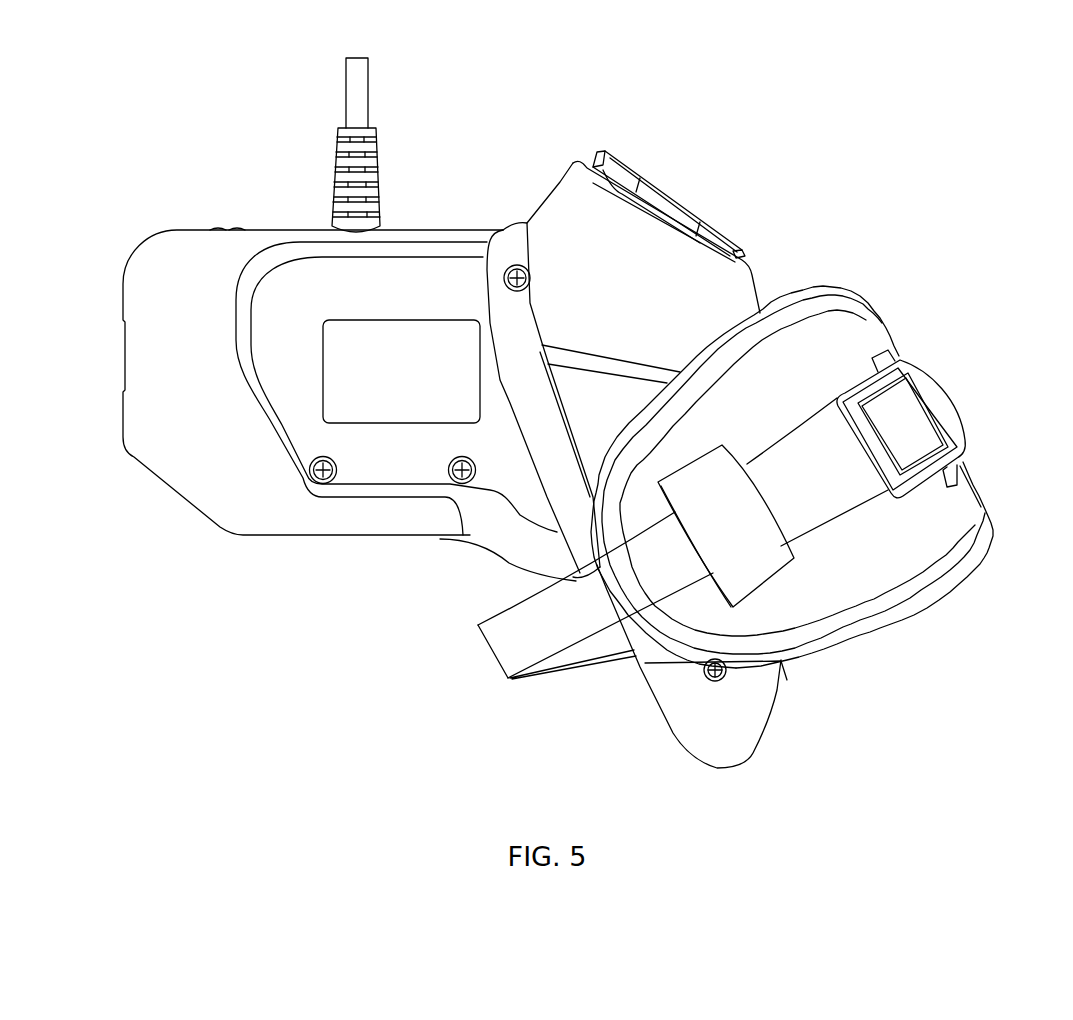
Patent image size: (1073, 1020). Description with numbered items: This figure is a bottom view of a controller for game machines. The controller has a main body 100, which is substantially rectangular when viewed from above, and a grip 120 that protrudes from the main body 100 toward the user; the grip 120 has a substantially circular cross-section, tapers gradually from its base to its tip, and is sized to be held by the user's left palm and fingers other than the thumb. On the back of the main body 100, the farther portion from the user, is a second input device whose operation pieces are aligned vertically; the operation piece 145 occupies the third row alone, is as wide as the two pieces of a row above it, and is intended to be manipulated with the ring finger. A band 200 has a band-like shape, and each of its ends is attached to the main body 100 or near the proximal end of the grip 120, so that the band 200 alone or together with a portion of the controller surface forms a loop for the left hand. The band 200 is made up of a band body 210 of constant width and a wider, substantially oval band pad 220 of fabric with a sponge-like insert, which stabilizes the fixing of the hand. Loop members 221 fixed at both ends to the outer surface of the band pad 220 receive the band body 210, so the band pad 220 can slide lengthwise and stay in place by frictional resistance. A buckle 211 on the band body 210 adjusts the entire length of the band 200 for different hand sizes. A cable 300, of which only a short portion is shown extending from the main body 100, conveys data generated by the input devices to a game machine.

The main body 100 is at (183, 498).
The grip 120 is at (752, 740).
The operation piece 145 is at (670, 203).
The band 200 is at (880, 320).
The band body 210 is at (500, 648).
The buckle 211 is at (947, 397).
The band pad 220 is at (977, 552).
The loop member 221 is at (705, 532).
The cable 300 is at (348, 90).